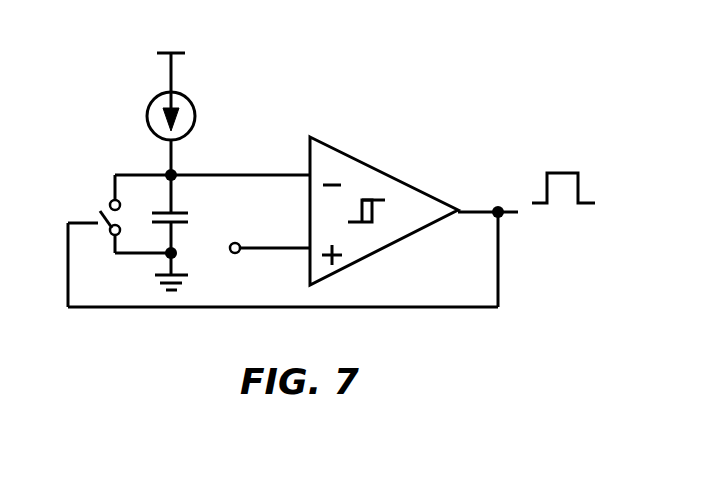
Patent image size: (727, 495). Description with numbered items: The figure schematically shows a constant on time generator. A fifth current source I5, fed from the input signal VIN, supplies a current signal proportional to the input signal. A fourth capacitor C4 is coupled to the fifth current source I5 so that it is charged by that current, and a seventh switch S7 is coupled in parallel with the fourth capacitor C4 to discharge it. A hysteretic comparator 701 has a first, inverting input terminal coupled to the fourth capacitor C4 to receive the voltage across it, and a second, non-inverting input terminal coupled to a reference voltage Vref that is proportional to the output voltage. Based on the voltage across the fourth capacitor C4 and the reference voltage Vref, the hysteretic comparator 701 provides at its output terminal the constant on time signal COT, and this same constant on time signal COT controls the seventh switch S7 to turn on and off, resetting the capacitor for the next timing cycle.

The hysteretic comparator 701 is at (383, 173).
The fifth current source I5 is at (159, 116).
The fourth capacitor C4 is at (182, 214).
The seventh switch S7 is at (119, 214).
The reference voltage Vref is at (270, 239).
The input signal VIN is at (151, 62).
The constant on time signal COT is at (526, 206).